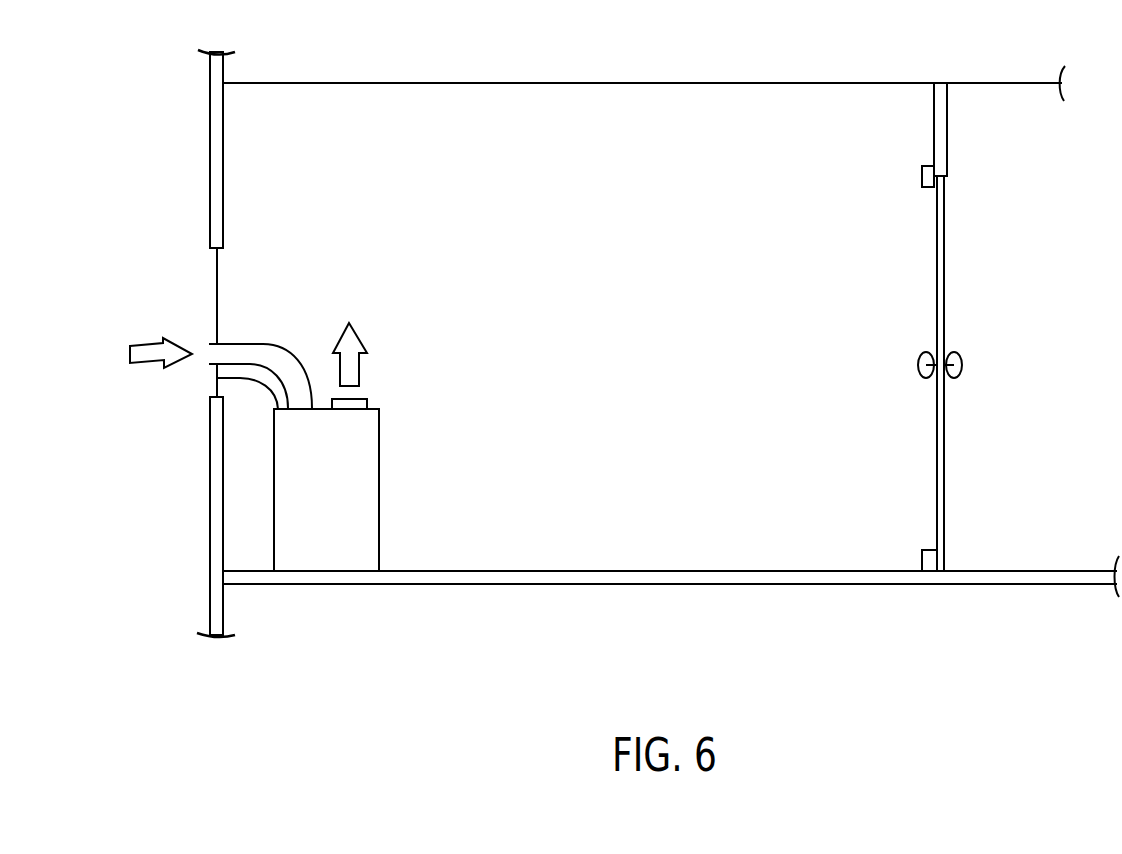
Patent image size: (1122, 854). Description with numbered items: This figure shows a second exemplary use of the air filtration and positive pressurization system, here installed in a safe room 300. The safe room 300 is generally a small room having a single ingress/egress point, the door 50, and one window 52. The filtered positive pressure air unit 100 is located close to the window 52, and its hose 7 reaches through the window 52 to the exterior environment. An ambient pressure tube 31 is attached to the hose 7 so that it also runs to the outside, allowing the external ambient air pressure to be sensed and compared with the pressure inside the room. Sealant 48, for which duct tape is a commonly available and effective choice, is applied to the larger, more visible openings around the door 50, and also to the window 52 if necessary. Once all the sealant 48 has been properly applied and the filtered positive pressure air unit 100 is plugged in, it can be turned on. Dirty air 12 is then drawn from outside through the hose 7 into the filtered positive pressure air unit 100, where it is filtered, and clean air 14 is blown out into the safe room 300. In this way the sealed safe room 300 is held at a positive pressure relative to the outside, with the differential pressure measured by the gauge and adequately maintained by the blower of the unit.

The safe room 300 is at (800, 103).
The window 52 is at (217, 285).
The hose 7 is at (265, 345).
The ambient pressure tube 31 is at (258, 383).
The dirty air 12 is at (149, 362).
The clean air 14 is at (358, 365).
The filtered positive pressure air unit 100 is at (380, 493).
The door 50 is at (944, 305).
The sealant 48 is at (922, 178).